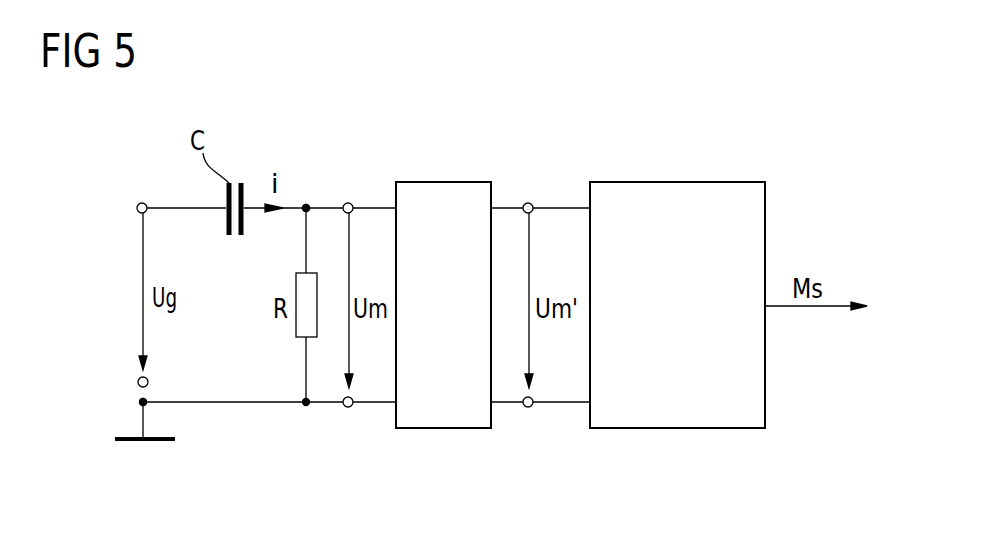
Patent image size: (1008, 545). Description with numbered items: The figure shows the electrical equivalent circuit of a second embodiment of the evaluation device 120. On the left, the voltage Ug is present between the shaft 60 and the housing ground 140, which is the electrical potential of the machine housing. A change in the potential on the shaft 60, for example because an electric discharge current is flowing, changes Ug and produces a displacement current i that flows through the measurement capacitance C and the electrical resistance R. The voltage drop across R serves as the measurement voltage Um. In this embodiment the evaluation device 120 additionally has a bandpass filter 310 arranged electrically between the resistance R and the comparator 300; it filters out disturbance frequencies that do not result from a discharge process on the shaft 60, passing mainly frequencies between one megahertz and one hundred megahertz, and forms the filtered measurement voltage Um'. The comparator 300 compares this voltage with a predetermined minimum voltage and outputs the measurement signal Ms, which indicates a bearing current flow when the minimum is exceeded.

The shaft 60 is at (141, 203).
The housing ground 140 is at (142, 436).
The evaluation device 120 is at (326, 192).
The bandpass filter 310 is at (472, 181).
The comparator 300 is at (766, 356).